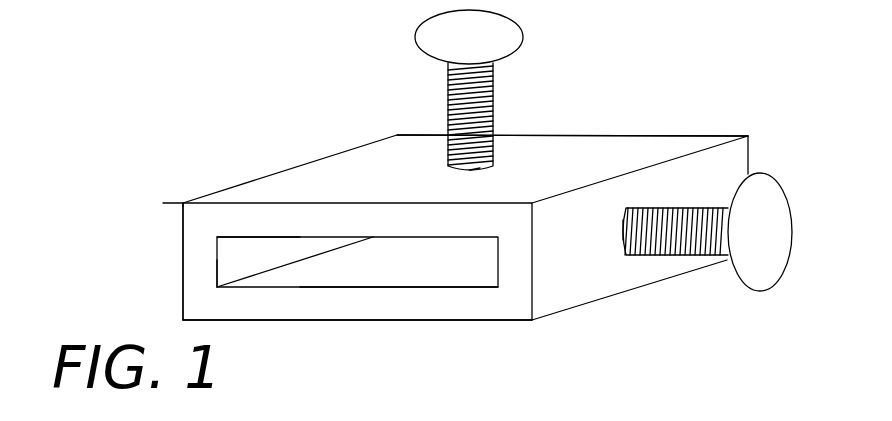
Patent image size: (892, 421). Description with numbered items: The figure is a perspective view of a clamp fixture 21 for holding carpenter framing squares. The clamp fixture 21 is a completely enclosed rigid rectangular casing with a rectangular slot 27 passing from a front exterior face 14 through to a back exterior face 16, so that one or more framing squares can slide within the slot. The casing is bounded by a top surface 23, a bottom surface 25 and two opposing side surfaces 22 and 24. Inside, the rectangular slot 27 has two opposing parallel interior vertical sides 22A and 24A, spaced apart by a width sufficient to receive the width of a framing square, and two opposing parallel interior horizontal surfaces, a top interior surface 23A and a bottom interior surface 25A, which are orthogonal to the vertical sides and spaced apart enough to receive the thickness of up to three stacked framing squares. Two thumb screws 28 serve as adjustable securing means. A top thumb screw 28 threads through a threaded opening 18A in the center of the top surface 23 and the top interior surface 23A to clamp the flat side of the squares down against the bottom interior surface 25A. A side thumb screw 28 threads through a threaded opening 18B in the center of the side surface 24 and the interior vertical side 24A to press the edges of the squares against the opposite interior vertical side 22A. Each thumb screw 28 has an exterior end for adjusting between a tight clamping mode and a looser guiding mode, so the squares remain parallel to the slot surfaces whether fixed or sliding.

The front exterior face 14 is at (527, 303).
The back exterior face 16 is at (663, 137).
The threaded opening 18A is at (480, 168).
The threaded opening 18B is at (620, 226).
The clamp fixture 21 is at (182, 203).
The side surface 22 is at (182, 247).
The interior vertical side 22A is at (225, 252).
The top surface 23 is at (353, 168).
The top interior surface 23A is at (263, 244).
The side surface 24 is at (725, 160).
The interior vertical side 24A is at (460, 253).
The bottom surface 25 is at (347, 321).
The bottom interior surface 25A is at (385, 273).
The rectangular slot 27 is at (447, 263).
The thumb screw 28 is at (497, 120).